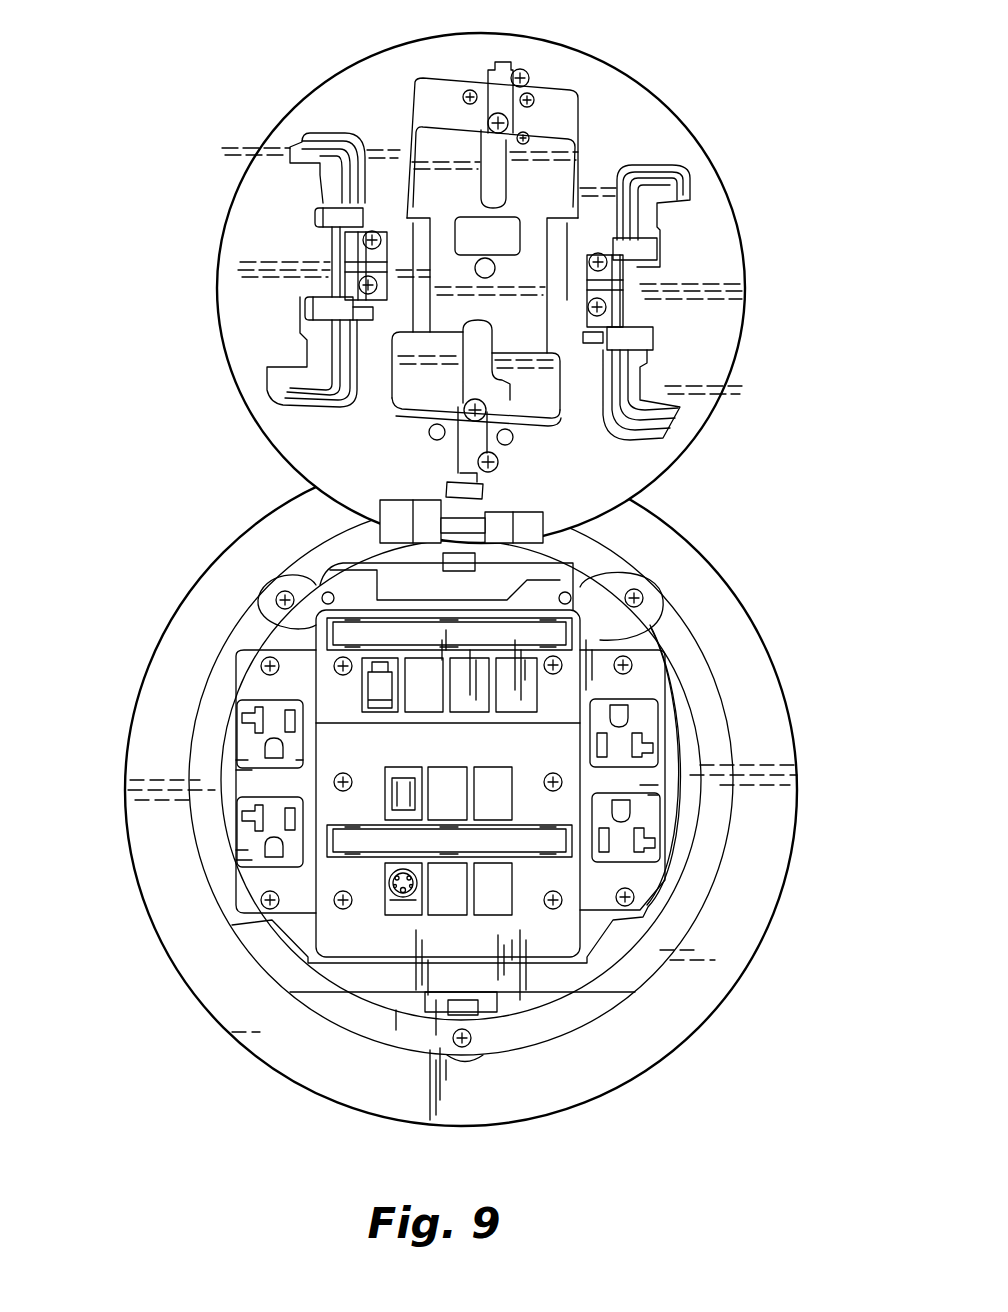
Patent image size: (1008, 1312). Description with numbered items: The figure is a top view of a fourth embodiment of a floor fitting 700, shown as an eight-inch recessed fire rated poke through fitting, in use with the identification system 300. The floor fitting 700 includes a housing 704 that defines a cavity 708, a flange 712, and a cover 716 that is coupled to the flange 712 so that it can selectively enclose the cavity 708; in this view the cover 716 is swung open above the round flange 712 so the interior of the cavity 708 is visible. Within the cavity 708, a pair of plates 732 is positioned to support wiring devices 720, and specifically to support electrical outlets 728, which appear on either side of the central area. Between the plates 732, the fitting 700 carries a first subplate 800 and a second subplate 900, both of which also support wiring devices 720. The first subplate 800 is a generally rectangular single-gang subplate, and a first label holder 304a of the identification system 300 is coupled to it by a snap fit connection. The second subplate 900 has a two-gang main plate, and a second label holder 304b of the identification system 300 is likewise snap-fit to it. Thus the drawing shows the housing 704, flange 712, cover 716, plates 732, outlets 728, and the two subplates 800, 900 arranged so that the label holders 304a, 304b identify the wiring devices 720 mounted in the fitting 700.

The floor fitting 700 is at (138, 426).
The housing 704 is at (668, 680).
The cavity 708 is at (517, 987).
The flange 712 is at (762, 677).
The cover 716 is at (640, 130).
The wiring devices 720 is at (362, 690).
The electrical outlets 728 is at (649, 829).
The plates 732 is at (233, 778).
The first subplate 800 is at (553, 690).
The second subplate 900 is at (347, 932).
The identification system 300 is at (563, 612).
The first label holder 304a is at (360, 622).
The second label holder 304b is at (560, 880).